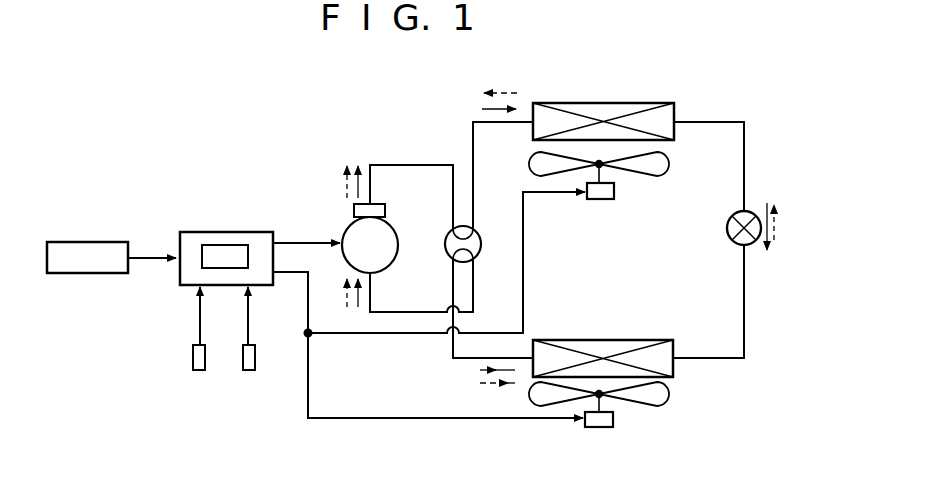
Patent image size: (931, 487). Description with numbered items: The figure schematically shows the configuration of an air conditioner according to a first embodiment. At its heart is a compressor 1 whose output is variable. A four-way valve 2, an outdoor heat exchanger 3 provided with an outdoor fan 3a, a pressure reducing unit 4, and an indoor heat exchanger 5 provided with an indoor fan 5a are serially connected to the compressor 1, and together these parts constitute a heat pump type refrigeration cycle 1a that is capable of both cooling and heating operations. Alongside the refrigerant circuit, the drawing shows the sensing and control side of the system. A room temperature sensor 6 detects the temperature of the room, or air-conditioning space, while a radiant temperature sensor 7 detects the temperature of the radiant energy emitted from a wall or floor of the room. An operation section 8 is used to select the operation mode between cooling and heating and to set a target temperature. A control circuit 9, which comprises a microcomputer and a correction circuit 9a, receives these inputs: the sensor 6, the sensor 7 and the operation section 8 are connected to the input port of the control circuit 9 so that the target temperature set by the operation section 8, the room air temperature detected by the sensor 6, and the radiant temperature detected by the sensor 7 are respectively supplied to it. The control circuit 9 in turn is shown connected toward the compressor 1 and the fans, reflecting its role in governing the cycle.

The compressor 1 is at (345, 233).
The heat pump type refrigeration cycle 1a is at (688, 113).
The four-way valve 2 is at (447, 238).
The outdoor heat exchanger 3 is at (603, 103).
The outdoor fan 3a is at (670, 163).
The pressure reducing unit 4 is at (729, 237).
The indoor heat exchanger 5 is at (676, 374).
The indoor fan 5a is at (655, 405).
The room temperature sensor 6 is at (198, 370).
The radiant temperature sensor 7 is at (248, 370).
The operation section 8 is at (88, 242).
The control circuit 9 is at (228, 232).
The correction circuit 9a is at (202, 265).